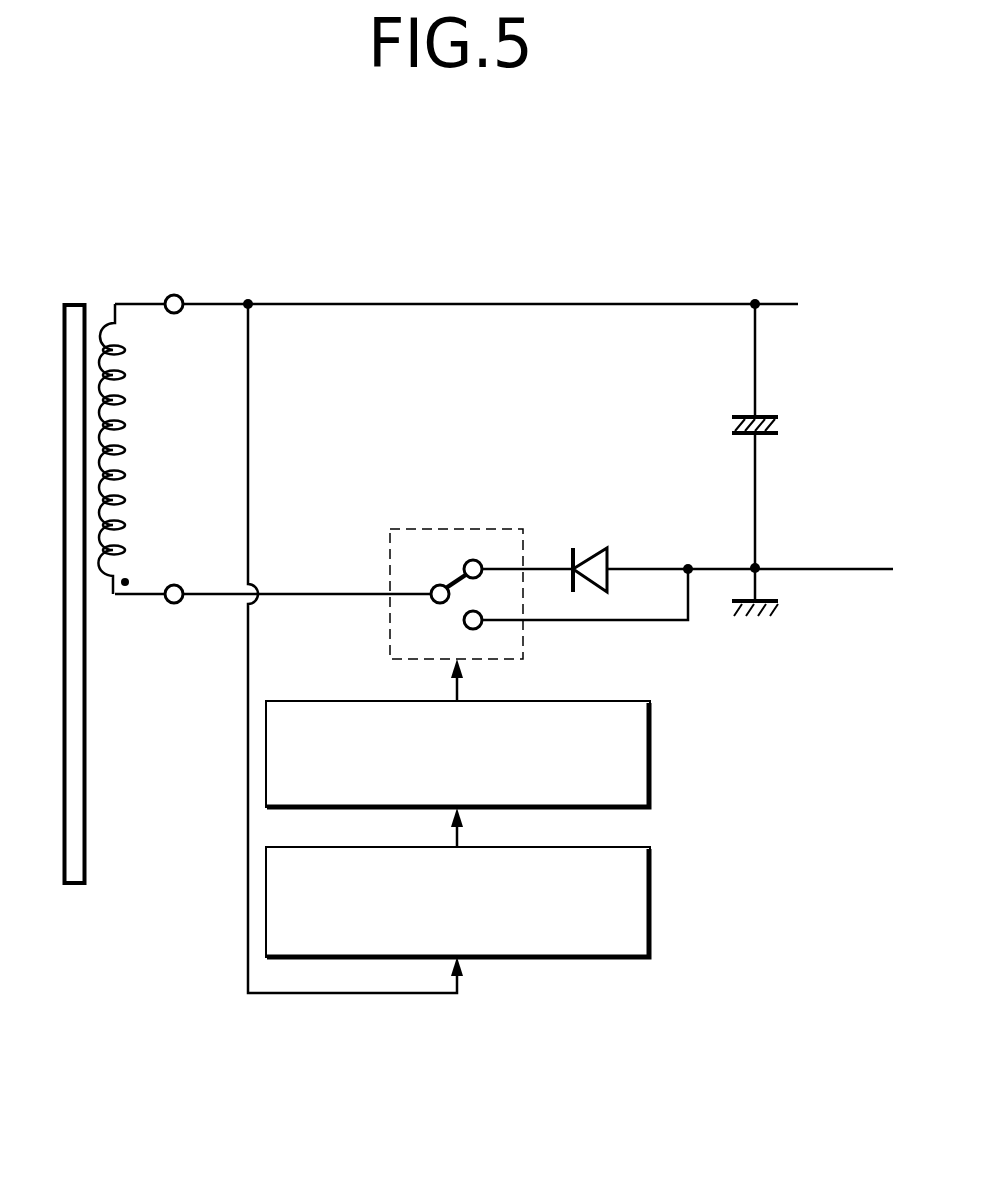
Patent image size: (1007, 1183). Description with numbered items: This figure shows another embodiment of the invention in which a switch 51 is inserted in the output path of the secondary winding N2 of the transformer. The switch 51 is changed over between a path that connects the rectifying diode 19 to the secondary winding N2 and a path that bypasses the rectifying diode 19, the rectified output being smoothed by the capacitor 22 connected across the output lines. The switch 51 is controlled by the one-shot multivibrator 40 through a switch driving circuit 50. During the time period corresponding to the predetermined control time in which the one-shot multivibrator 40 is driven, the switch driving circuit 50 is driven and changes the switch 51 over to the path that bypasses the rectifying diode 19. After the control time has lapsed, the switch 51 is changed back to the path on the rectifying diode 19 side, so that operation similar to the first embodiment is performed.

The secondary winding N2 is at (150, 449).
The switch 51 is at (493, 527).
The rectifying diode 19 is at (593, 552).
The capacitor 22 is at (768, 414).
The switch driving circuit 50 is at (652, 746).
The one-shot multivibrator 40 is at (652, 892).